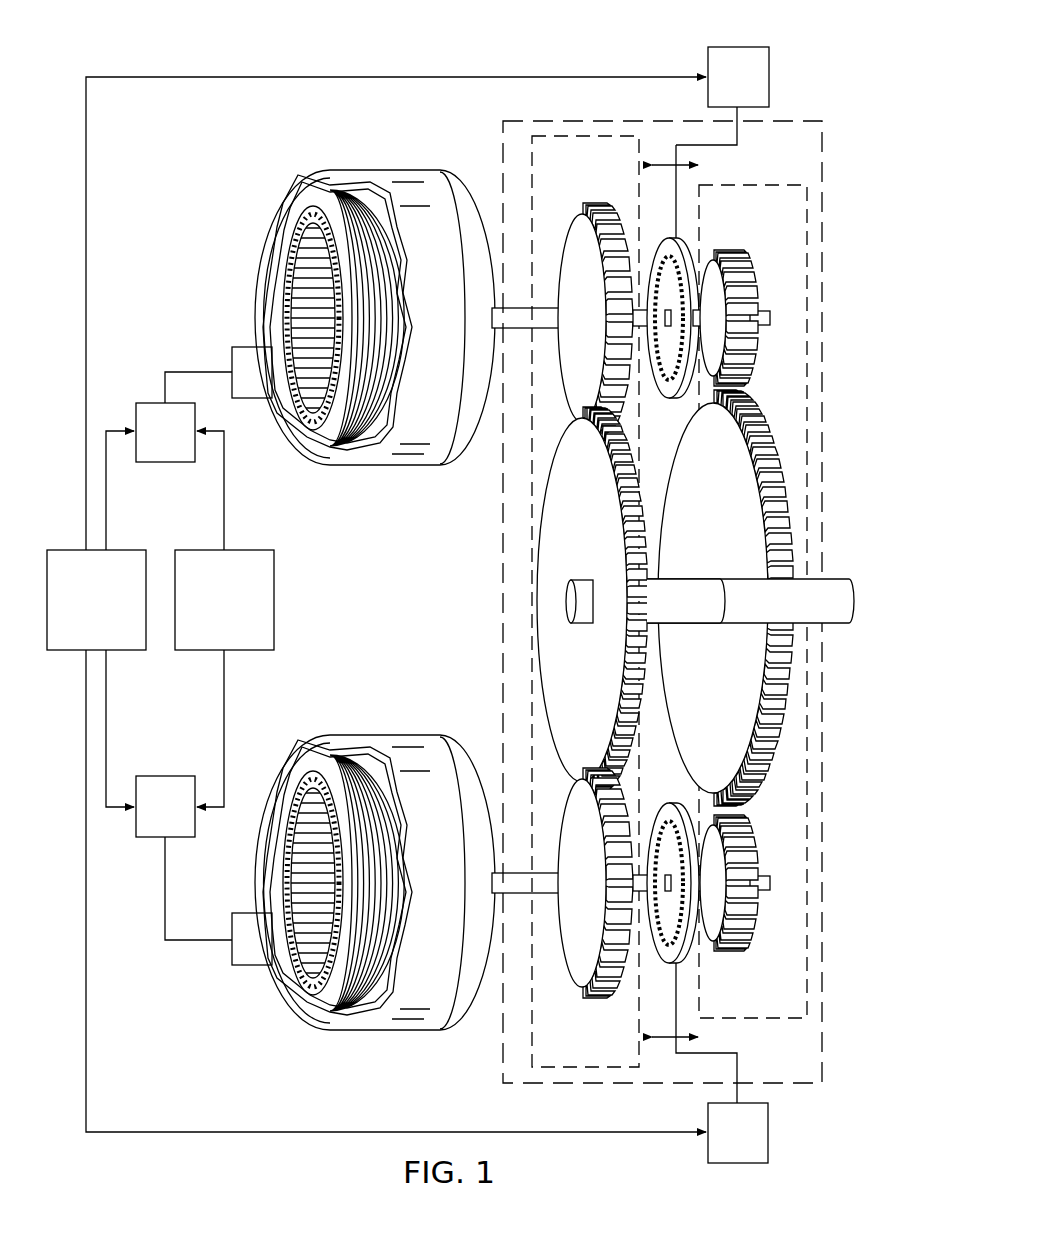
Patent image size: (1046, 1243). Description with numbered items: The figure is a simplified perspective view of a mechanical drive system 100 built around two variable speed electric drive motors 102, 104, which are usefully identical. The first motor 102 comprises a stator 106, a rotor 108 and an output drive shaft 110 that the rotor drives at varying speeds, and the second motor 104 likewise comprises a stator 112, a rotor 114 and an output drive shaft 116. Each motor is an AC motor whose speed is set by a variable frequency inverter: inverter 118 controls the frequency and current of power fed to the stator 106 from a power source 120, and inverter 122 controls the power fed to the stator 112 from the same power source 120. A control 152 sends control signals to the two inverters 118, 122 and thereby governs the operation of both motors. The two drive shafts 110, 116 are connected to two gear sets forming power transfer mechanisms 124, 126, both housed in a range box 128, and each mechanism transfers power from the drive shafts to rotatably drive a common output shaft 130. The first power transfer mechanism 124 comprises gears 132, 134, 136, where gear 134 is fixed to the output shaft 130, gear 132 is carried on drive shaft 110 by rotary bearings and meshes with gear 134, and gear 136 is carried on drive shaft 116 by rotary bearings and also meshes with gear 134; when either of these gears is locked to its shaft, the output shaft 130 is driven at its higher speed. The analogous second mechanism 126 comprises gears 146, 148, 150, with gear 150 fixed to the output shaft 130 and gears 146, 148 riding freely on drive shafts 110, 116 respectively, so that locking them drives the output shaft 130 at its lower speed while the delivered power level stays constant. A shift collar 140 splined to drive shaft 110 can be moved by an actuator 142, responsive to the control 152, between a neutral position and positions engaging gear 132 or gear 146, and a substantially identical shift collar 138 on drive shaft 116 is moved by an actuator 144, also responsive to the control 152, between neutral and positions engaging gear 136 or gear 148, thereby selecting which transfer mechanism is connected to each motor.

The mechanical drive system 100 is at (216, 54).
The variable speed electric drive motor 102 is at (266, 211).
The variable speed electric drive motor 104 is at (390, 894).
The stator 106 is at (316, 173).
The rotor 108 is at (300, 283).
The output drive shaft 110 is at (513, 330).
The stator 112 is at (375, 862).
The rotor 114 is at (266, 883).
The output drive shaft 116 is at (503, 909).
The variable frequency inverter 118 is at (169, 461).
The power source 120 is at (195, 550).
The variable frequency inverter 122 is at (169, 795).
The power transfer mechanism 124 is at (522, 543).
The power transfer mechanism 126 is at (780, 182).
The range box 128 is at (500, 652).
The output shaft 130 is at (836, 580).
The gear 132 is at (581, 201).
The gear 134 is at (592, 600).
The gear 136 is at (515, 911).
The shift collar 138 is at (663, 953).
The shift collar device 140 is at (660, 240).
The actuator 142 is at (712, 76).
The actuator 144 is at (709, 1135).
The gear 146 is at (734, 249).
The gear 148 is at (731, 915).
The gear 150 is at (726, 598).
The control 152 is at (66, 550).